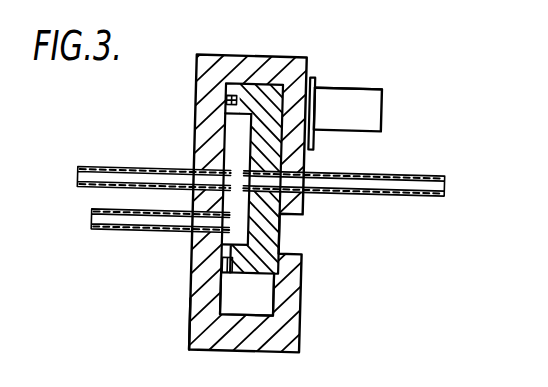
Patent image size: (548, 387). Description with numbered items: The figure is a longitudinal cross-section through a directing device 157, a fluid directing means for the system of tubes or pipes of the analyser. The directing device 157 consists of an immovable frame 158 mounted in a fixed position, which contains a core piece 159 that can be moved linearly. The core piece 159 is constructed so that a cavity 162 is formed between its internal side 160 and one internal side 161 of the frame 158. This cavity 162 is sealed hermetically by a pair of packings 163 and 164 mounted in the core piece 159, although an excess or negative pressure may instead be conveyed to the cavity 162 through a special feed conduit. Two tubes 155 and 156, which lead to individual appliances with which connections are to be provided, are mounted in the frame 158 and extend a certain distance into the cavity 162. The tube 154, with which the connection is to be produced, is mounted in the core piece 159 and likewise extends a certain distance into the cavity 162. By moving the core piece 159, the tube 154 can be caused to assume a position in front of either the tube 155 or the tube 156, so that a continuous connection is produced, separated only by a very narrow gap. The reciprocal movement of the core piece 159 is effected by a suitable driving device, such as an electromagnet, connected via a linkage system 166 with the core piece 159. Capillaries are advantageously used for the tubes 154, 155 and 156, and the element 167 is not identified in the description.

The tube 154 is at (367, 196).
The tube 155 is at (160, 167).
The tube 156 is at (108, 230).
The directing device 157 is at (333, 89).
The frame 158 is at (287, 347).
The core piece 159 is at (222, 277).
The internal side 160 is at (226, 125).
The internal side 161 is at (193, 321).
The cavity 162 is at (281, 232).
The packing 163 is at (226, 100).
The packing 164 is at (222, 261).
The linkage system 166 is at (318, 152).
The actuator housing 167 is at (381, 95).